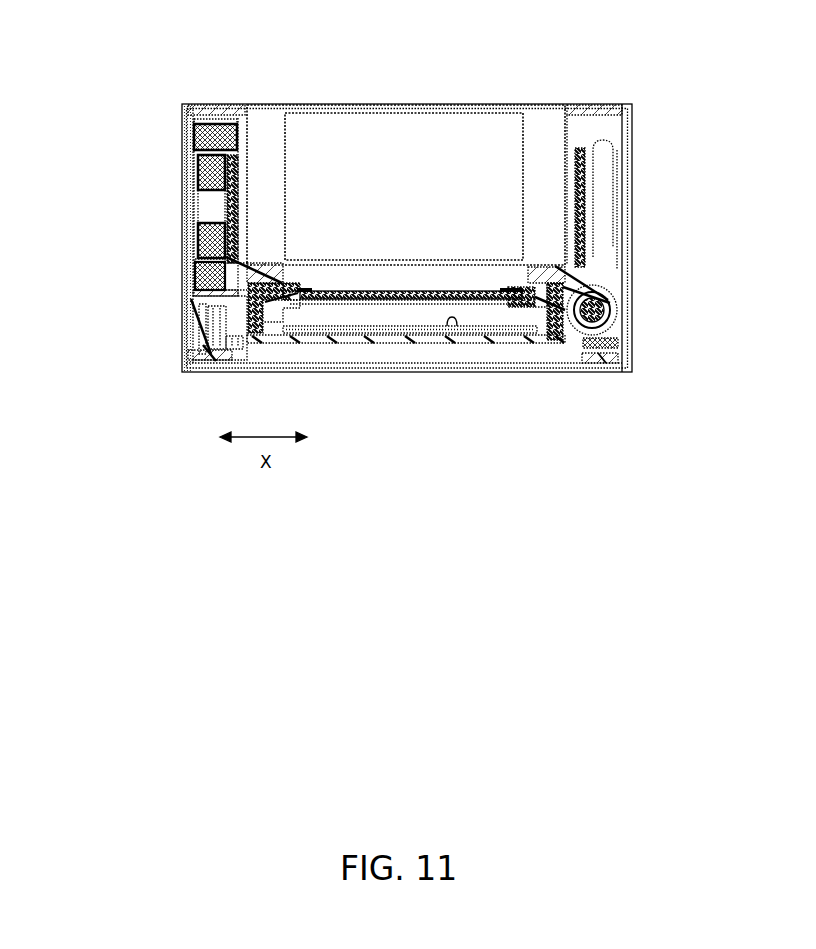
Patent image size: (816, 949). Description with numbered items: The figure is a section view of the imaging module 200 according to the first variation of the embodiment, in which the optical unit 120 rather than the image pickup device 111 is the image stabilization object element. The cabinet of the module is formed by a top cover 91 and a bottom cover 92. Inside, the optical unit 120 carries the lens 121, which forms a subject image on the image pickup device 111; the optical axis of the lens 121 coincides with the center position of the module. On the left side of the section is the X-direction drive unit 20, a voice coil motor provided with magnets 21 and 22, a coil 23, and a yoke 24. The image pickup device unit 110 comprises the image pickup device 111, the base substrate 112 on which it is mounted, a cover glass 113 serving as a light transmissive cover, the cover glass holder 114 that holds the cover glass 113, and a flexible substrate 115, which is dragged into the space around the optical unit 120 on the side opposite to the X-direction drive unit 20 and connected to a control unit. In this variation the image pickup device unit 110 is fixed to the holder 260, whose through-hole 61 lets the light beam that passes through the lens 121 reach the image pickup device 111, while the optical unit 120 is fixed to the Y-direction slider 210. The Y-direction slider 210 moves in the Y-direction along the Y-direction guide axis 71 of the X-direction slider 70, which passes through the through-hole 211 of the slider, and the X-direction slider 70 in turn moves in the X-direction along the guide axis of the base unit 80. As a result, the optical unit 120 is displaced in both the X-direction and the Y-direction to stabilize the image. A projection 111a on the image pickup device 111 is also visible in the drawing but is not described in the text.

The imaging module 200 is at (160, 70).
The bottom cover 92 is at (181, 112).
The top cover 91 is at (221, 82).
The optical unit 120 is at (434, 153).
The lens 121 is at (404, 160).
The X-direction drive unit 20 is at (119, 124).
The magnet 21 is at (182, 134).
The magnet 22 is at (176, 262).
The coil 23 is at (182, 209).
The yoke 24 is at (176, 189).
The X-direction slider 70 is at (210, 318).
The base unit 80 is at (192, 353).
The cover glass holder 114 is at (268, 347).
The base substrate 112 is at (289, 347).
The cover glass 113 is at (412, 352).
The through-hole 61 is at (524, 350).
The image pickup device 111 is at (410, 370).
The protrusion 111a is at (452, 328).
The image pickup device unit 110 is at (406, 388).
The Y-direction slider 210 is at (585, 232).
The flexible substrate 115 is at (613, 192).
The holder 260 is at (580, 284).
The through-hole 211 is at (634, 300).
The Y-direction guide axis 71 is at (622, 324).